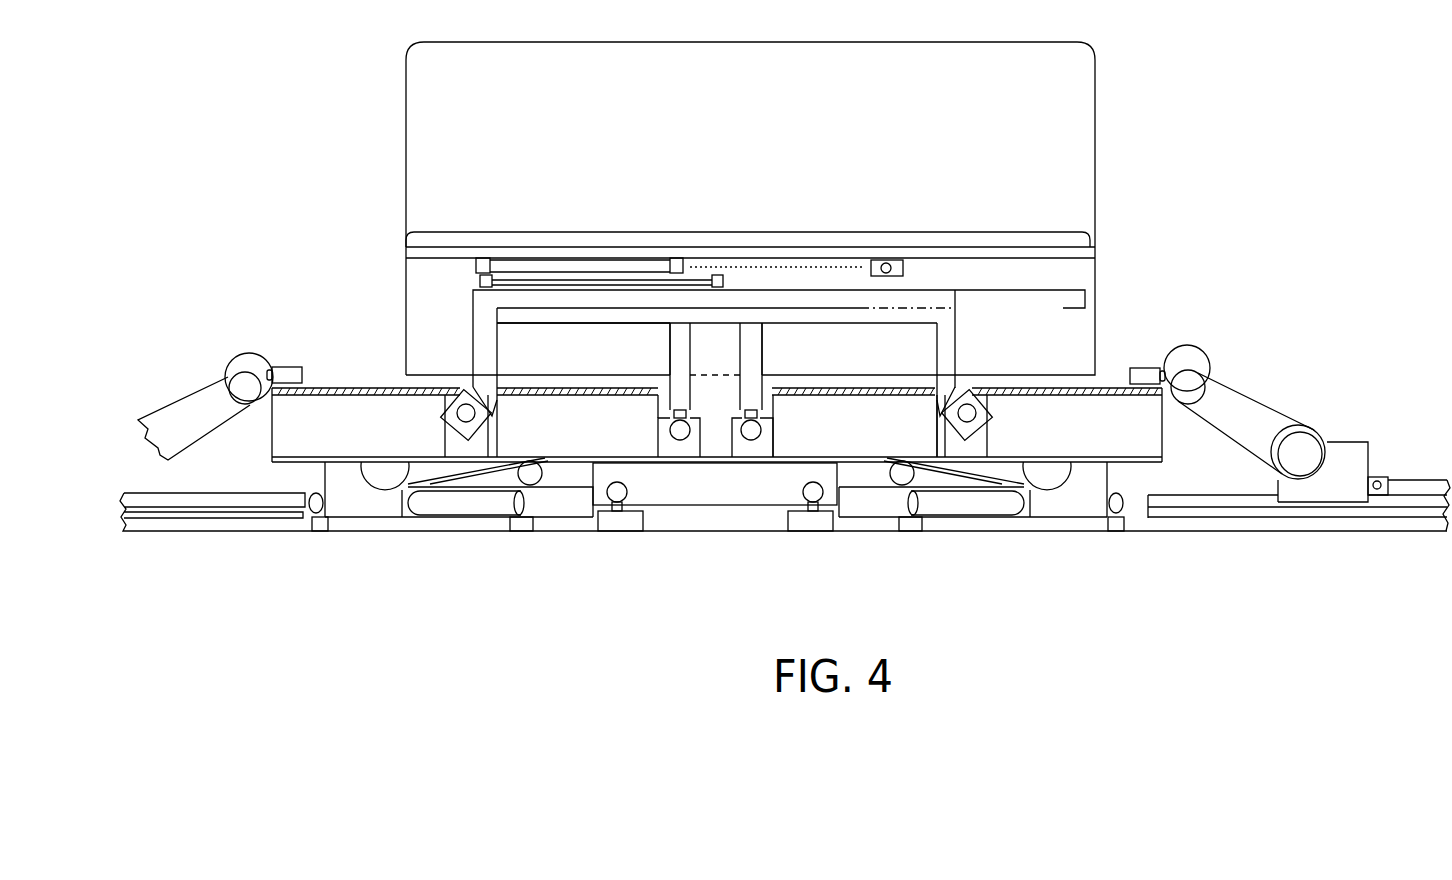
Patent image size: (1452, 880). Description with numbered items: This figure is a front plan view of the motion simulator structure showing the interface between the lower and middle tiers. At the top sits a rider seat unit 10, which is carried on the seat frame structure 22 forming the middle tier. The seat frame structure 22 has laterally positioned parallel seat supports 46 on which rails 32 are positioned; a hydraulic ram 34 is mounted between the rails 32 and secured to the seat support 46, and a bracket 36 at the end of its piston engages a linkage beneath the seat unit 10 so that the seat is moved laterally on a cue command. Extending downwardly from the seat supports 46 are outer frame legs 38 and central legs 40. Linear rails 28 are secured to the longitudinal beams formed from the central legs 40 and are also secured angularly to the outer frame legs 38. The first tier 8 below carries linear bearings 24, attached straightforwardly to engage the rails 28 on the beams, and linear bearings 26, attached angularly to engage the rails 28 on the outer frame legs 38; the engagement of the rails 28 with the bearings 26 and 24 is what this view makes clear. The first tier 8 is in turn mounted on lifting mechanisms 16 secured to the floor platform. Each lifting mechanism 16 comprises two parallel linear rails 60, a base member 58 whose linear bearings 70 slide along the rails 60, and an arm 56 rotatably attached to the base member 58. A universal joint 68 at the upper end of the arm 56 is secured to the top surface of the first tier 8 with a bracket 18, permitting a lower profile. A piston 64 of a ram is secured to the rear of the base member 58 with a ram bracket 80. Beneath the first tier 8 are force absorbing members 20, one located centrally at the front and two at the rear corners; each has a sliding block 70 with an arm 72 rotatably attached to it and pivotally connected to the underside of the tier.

The first tier 8 is at (272, 433).
The rider seat unit 10 is at (752, 163).
The lifting mechanism 16 is at (721, 407).
The bracket 18 is at (283, 365).
The force absorbing device 20 is at (737, 509).
The seat frame structure 22 is at (966, 332).
The linear bearing 24 is at (772, 422).
The linear bearing 26 is at (447, 422).
The linear rail 28 is at (462, 407).
The rail 32 is at (952, 299).
The hydraulic ram 34 is at (478, 284).
The bracket 36 is at (901, 258).
The outer frame leg 38 is at (472, 355).
The central leg 40 is at (667, 365).
The seat support 46 is at (575, 318).
The arm 56 is at (198, 430).
The base member 58 is at (1347, 442).
The linear rail 60 is at (180, 502).
The piston 64 is at (1425, 487).
The universal joint 68 is at (250, 352).
The linear bearing 70 is at (338, 490).
The arm 72 is at (512, 473).
The ram bracket 80 is at (1383, 475).